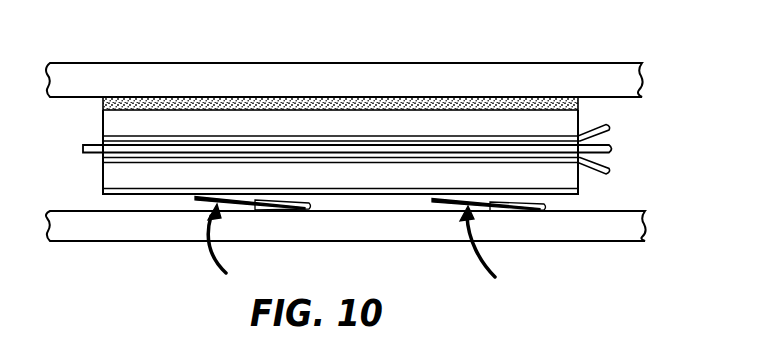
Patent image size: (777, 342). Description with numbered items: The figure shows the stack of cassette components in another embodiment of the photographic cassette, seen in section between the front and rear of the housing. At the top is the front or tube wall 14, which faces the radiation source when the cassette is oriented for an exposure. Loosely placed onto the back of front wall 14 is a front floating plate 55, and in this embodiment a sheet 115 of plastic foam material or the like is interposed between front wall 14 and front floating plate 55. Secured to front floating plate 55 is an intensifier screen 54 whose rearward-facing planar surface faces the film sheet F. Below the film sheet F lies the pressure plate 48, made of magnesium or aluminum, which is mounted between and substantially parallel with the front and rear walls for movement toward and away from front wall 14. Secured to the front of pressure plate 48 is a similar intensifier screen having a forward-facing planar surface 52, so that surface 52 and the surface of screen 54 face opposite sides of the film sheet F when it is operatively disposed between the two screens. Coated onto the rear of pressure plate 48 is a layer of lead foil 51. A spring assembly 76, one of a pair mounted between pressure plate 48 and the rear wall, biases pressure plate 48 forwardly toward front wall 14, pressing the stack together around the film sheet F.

The front wall 14 is at (282, 75).
The sheet of plastic foam material 115 is at (148, 97).
The front floating plate 55 is at (340, 118).
The intensifier screen 54 is at (412, 138).
The forward-facing planar surface 52 is at (135, 157).
The layer of lead foil 51 is at (347, 194).
The pressure plate 48 is at (398, 180).
The spring assembly 76 is at (364, 246).
The film sheet F is at (614, 152).